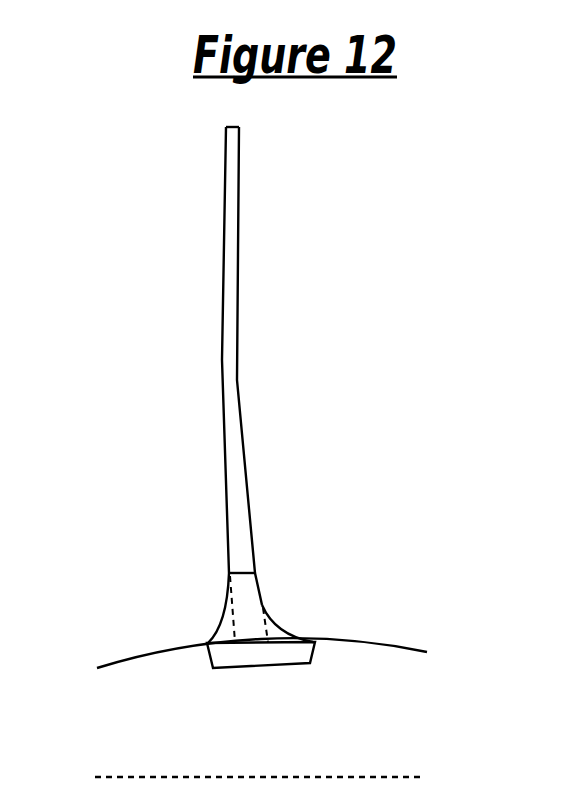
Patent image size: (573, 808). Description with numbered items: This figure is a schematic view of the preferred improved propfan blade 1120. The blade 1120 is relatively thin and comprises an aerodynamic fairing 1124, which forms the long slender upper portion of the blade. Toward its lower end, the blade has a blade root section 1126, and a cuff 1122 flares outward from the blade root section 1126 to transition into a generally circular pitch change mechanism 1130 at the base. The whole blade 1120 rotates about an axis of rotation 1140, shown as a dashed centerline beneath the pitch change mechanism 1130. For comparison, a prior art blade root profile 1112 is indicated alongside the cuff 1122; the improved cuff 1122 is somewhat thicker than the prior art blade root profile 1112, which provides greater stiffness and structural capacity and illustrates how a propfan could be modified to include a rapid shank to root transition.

The improved blade 1120 is at (198, 417).
The aerodynamic fairing 1124 is at (238, 395).
The blade root section 1126 is at (228, 566).
The cuff 1122 is at (221, 623).
The prior art blade root profile 1112 is at (272, 622).
The pitch change mechanism 1130 is at (273, 665).
The axis of rotation 1140 is at (203, 775).